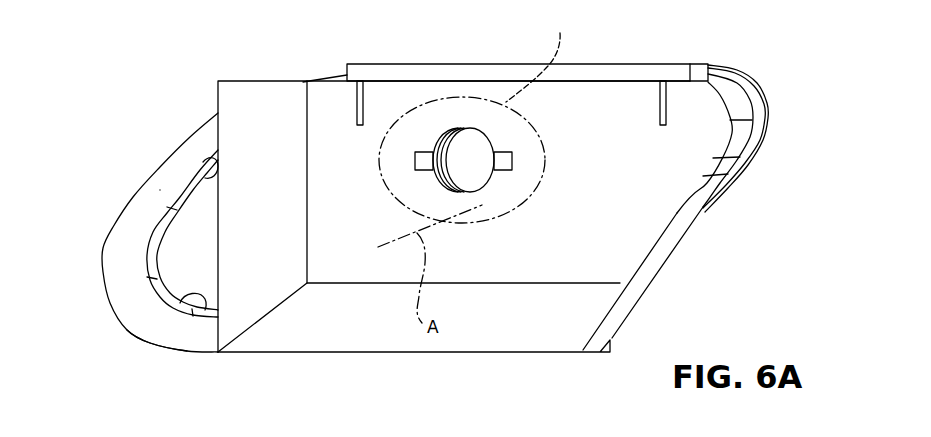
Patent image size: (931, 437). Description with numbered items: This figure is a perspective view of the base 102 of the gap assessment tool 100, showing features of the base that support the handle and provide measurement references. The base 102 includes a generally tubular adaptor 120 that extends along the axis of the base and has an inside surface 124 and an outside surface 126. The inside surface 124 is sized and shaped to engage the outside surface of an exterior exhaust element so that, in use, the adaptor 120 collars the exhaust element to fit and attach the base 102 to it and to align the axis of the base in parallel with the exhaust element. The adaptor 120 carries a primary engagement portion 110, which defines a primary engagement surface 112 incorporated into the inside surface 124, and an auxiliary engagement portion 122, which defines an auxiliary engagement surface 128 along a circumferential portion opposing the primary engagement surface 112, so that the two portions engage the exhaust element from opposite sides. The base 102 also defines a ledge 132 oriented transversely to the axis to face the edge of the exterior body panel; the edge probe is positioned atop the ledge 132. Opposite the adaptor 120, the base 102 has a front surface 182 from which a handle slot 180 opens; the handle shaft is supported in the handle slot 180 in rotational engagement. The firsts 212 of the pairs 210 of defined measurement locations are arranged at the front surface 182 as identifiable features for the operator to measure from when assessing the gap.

The gap assessment tool 100 is at (228, 356).
The base 102 is at (532, 352).
The primary engagement portion 110 is at (182, 233).
The primary engagement surface 112 is at (163, 120).
The adaptor 120 is at (172, 150).
The auxiliary engagement portion 122 is at (157, 340).
The inside surface 124 is at (213, 168).
The outside surface 126 is at (158, 187).
The auxiliary engagement surface 128 is at (131, 326).
The ledge 132 is at (707, 80).
The handle slot 180 is at (486, 141).
The front surface 182 is at (345, 272).
The pairs of defined measurement locations 210 is at (348, 113).
The firsts of the pairs of defined measurement locations 212 is at (511, 103).